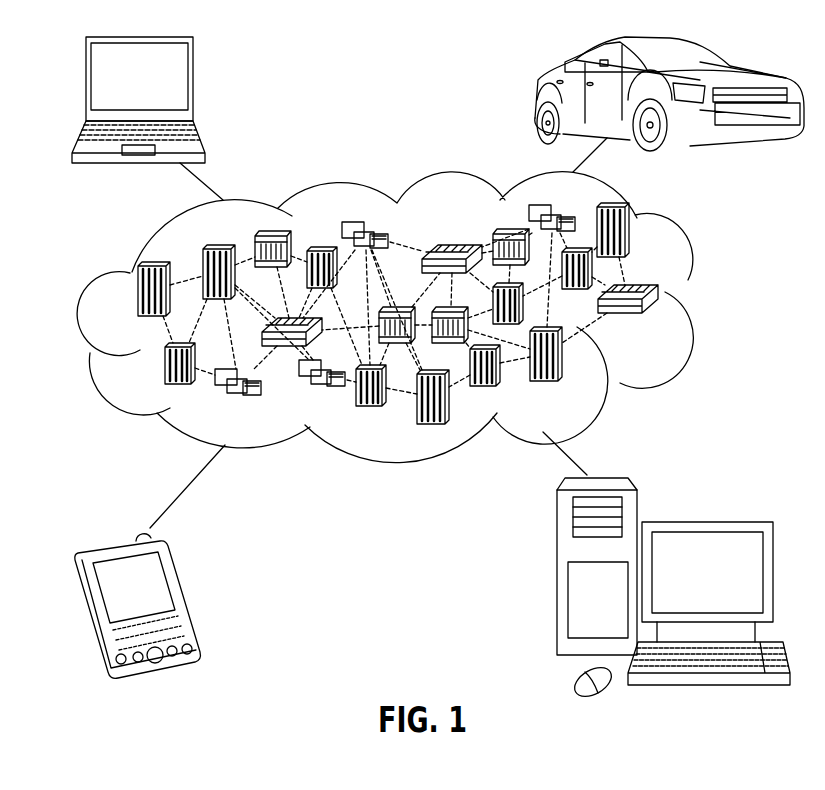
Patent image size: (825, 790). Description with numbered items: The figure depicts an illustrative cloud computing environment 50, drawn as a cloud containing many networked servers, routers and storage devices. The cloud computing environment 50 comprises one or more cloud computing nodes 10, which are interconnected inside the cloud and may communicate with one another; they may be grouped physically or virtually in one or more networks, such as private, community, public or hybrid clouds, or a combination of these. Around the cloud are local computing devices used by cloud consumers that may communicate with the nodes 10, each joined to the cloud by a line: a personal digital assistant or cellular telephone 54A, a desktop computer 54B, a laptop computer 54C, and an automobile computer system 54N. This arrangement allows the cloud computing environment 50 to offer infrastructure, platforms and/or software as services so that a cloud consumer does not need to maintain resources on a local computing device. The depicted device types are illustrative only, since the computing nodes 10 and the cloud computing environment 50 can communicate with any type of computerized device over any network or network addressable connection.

The cloud computing nodes 10 is at (415, 317).
The cloud computing environment 50 is at (708, 300).
The personal digital assistant or cellular telephone 54A is at (183, 598).
The desktop computer 54B is at (705, 522).
The laptop computer 54C is at (195, 86).
The automobile computer system 54N is at (533, 98).